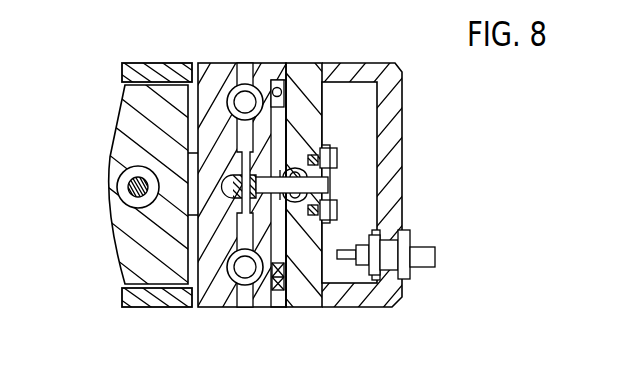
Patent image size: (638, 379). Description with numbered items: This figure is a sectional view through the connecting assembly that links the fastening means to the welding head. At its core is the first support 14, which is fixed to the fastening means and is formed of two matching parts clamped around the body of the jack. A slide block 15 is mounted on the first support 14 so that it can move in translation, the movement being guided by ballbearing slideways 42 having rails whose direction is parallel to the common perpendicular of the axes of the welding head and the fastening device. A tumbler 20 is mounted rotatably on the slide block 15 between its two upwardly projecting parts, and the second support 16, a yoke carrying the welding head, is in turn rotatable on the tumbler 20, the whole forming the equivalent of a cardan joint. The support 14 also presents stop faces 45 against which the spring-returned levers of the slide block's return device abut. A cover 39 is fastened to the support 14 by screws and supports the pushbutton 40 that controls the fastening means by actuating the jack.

The first support 14 is at (308, 116).
The slide block 15 is at (218, 70).
The second support 16 is at (134, 62).
The tumbler 20 is at (118, 227).
The cover 39 is at (390, 150).
The pushbutton 40 is at (410, 247).
The ballbearing slideways 42 is at (277, 80).
The stop faces 45 is at (326, 150).